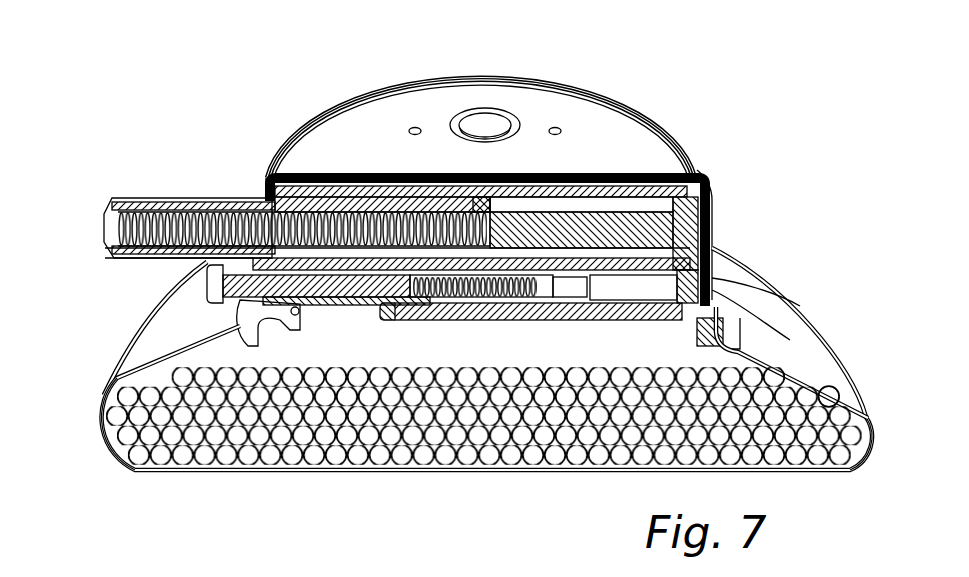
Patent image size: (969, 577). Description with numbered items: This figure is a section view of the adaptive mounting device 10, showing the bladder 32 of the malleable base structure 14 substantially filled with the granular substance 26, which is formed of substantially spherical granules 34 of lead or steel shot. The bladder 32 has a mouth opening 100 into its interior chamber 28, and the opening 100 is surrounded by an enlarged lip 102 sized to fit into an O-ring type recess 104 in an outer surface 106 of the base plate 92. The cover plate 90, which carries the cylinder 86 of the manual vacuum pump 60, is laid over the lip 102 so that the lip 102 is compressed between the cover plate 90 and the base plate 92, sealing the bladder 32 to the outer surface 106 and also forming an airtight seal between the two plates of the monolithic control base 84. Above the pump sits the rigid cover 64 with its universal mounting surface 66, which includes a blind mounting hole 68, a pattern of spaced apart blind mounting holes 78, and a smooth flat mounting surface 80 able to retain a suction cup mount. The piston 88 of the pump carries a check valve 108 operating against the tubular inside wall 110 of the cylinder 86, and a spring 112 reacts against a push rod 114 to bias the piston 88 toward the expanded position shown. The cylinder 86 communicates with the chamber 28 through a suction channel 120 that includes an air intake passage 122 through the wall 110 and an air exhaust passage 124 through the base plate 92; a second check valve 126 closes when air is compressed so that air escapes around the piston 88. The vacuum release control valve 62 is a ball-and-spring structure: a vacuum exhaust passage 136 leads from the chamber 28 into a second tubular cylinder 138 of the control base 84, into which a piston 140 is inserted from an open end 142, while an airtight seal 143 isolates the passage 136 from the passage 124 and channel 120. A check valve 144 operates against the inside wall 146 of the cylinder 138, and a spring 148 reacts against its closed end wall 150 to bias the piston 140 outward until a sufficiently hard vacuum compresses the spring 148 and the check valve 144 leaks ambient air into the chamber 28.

The adaptive mounting device 10 is at (196, 112).
The malleable base structure 14 is at (836, 342).
The granular substance 26 is at (802, 387).
The interior chamber 28 is at (845, 462).
The bladder 32 is at (110, 460).
The spherical granules 34 is at (840, 400).
The manual vacuum pump 60 is at (290, 175).
The vacuum release control valve 62 is at (215, 290).
The cover 64 is at (272, 168).
The universal mounting surface 66 is at (623, 168).
The blind mounting hole 68 is at (465, 127).
The blind mounting holes 78 is at (413, 128).
The mounting surface 80 is at (394, 158).
The monolithic control base 84 is at (702, 212).
The cylinder 86 is at (653, 178).
The piston 88 is at (212, 200).
The cover plate 90 is at (712, 280).
The base plate 92 is at (733, 350).
The mouth opening 100 is at (672, 318).
The lip 102 is at (688, 322).
The O-ring type recess 104 is at (682, 320).
The outer surface 106 is at (690, 337).
The check valve 108 is at (490, 195).
The inside wall 110 is at (633, 270).
The spring 112 is at (343, 200).
The push rod 114 is at (633, 206).
The suction channel 120 is at (648, 298).
The air intake passage 122 is at (690, 260).
The air exhaust passage 124 is at (575, 310).
The check valve 126 is at (577, 295).
The vacuum exhaust passage 136 is at (412, 305).
The second tubular cylinder 138 is at (338, 305).
The piston 140 is at (210, 288).
The open end 142 is at (240, 302).
The airtight seal 143 is at (307, 307).
The check valve 144 is at (397, 305).
The inside wall 146 is at (370, 305).
The spring 148 is at (493, 323).
The closed end wall 150 is at (540, 313).